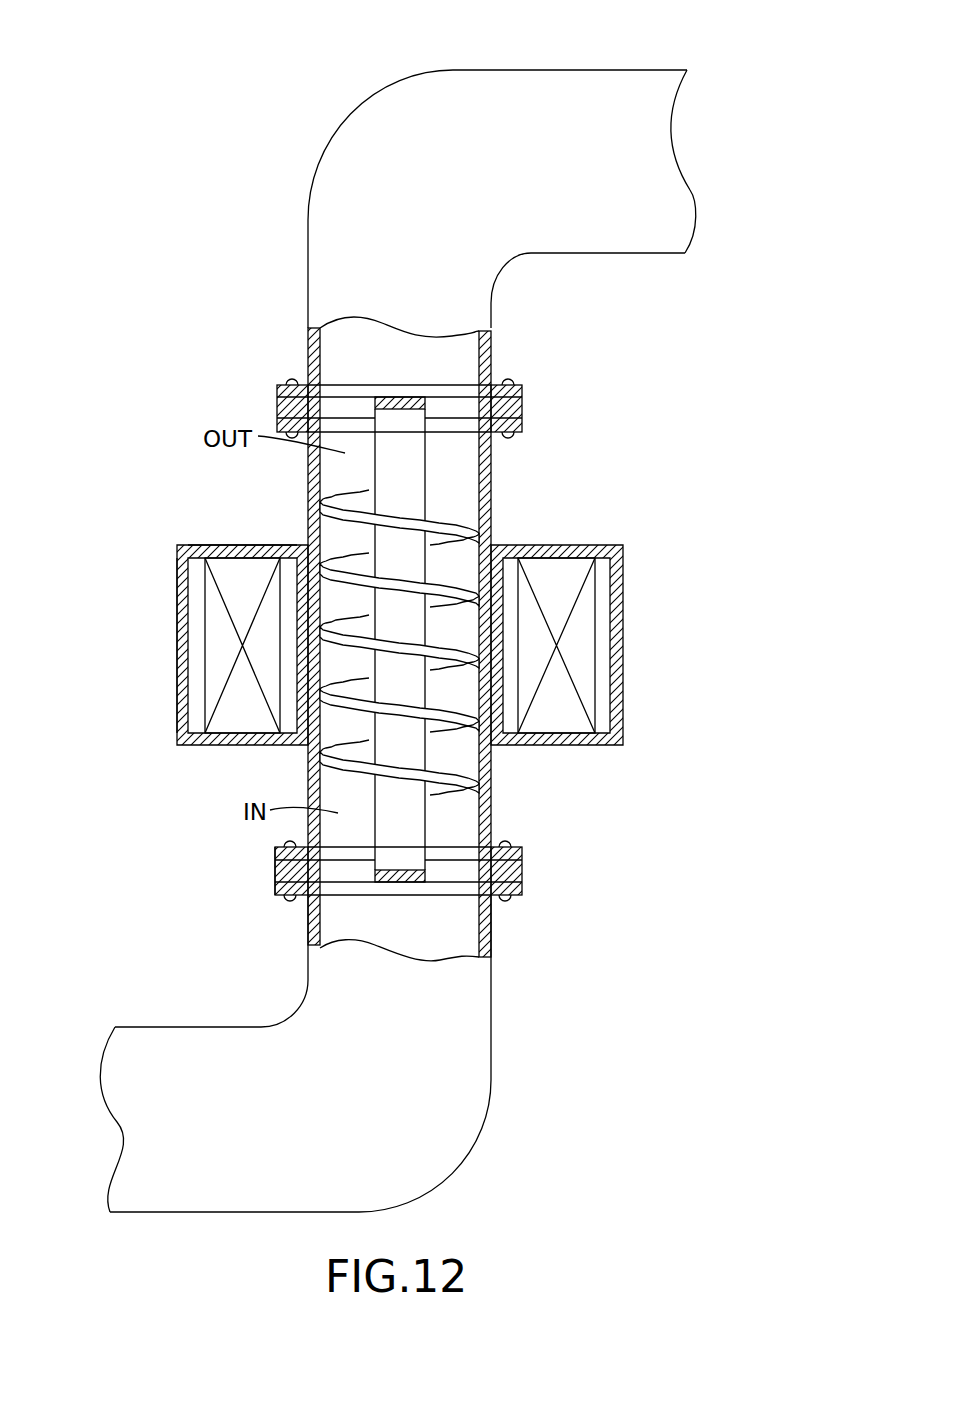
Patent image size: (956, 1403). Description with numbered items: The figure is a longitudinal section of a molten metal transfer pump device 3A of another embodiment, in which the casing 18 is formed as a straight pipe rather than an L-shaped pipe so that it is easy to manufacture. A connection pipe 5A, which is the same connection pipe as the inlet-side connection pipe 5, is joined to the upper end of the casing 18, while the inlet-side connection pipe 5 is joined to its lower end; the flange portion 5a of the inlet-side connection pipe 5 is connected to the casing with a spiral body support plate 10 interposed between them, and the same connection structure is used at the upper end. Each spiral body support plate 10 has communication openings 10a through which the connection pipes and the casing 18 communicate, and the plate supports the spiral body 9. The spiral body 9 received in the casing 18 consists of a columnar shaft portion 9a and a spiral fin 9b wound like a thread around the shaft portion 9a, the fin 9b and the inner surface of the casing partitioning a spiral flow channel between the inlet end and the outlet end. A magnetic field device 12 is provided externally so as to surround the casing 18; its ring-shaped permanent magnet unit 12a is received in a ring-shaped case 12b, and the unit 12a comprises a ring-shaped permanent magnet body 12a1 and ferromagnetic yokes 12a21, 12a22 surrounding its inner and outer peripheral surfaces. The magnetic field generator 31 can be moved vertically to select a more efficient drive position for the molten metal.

The pump device 3A is at (294, 522).
The connection pipe 5A is at (541, 95).
The inlet-side connection pipe 5 is at (427, 1142).
The flange portion 5a is at (275, 889).
The spiral body 9 is at (434, 639).
The shaft portion 9a is at (417, 477).
The spiral fin 9b is at (455, 522).
The spiral body support plate 10 is at (527, 408).
The communication openings 10a is at (350, 407).
The magnetic field device 12 is at (350, 604).
The permanent magnet unit 12a is at (194, 618).
The permanent magnet body 12a1 is at (217, 638).
The yoke 12a21 is at (195, 680).
The yoke 12a22 is at (288, 568).
The case 12b is at (225, 541).
The casing 18 is at (313, 772).
The magnetic field generator 31 is at (334, 604).